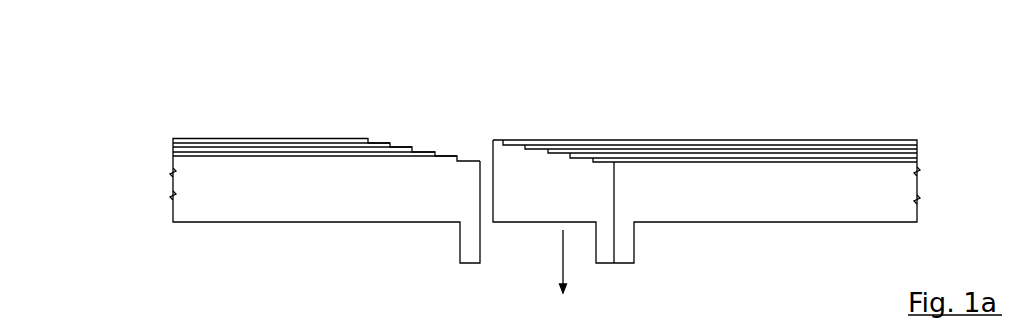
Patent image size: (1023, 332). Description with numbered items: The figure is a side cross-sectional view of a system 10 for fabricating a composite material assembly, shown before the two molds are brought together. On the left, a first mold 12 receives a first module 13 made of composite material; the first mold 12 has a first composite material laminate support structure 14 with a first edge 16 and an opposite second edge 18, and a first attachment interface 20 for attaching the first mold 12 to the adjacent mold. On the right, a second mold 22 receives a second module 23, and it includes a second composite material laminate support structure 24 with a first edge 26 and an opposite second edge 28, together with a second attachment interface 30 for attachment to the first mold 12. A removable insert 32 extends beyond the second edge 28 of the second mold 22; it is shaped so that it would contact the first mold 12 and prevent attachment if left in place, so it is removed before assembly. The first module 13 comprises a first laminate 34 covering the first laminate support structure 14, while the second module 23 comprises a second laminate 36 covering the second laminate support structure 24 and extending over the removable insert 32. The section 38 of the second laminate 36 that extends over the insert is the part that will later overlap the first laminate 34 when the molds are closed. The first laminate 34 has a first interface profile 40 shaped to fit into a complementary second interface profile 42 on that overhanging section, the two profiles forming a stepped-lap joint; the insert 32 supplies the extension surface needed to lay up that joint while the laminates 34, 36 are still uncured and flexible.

The system 10 is at (475, 77).
The first mold 12 is at (222, 223).
The first module 13 is at (185, 145).
The first composite material laminate support structure 14 is at (323, 186).
The first edge 16 is at (172, 183).
The second edge 18 is at (486, 164).
The first attachment interface 20 is at (468, 249).
The second mold 22 is at (847, 223).
The second module 23 is at (918, 148).
The second composite material laminate support structure 24 is at (737, 187).
The first edge 26 is at (918, 187).
The second edge 28 is at (615, 187).
The second attachment interface 30 is at (625, 243).
The removable insert 32 is at (512, 200).
The first laminate 34 is at (270, 153).
The second laminate 36 is at (780, 152).
The section 38 is at (567, 148).
The first interface profile 40 is at (413, 146).
The second interface profile 42 is at (538, 147).